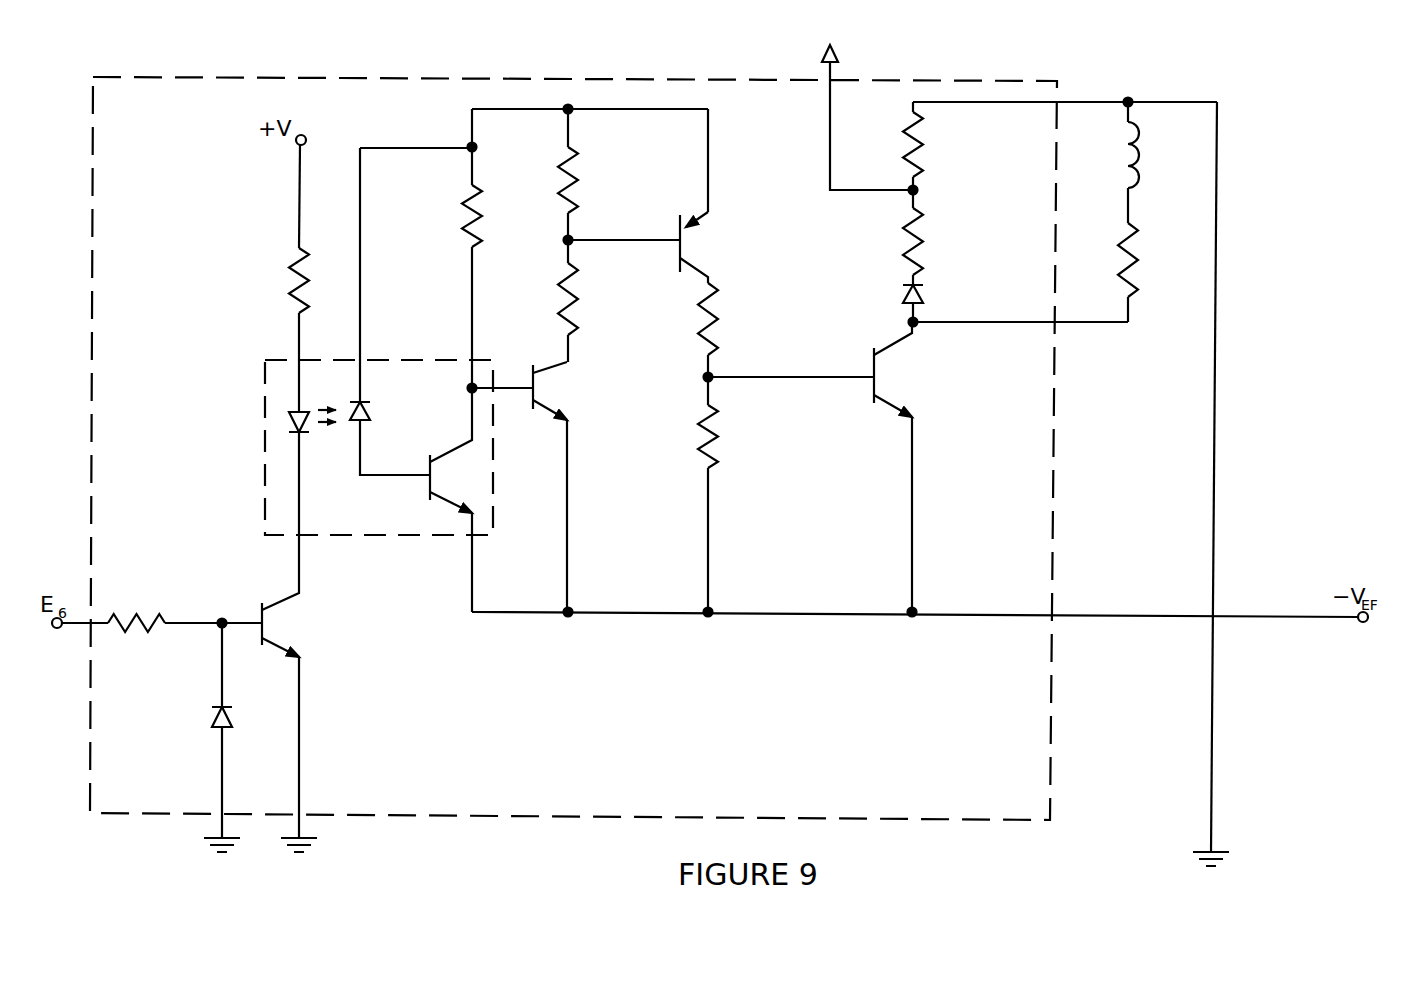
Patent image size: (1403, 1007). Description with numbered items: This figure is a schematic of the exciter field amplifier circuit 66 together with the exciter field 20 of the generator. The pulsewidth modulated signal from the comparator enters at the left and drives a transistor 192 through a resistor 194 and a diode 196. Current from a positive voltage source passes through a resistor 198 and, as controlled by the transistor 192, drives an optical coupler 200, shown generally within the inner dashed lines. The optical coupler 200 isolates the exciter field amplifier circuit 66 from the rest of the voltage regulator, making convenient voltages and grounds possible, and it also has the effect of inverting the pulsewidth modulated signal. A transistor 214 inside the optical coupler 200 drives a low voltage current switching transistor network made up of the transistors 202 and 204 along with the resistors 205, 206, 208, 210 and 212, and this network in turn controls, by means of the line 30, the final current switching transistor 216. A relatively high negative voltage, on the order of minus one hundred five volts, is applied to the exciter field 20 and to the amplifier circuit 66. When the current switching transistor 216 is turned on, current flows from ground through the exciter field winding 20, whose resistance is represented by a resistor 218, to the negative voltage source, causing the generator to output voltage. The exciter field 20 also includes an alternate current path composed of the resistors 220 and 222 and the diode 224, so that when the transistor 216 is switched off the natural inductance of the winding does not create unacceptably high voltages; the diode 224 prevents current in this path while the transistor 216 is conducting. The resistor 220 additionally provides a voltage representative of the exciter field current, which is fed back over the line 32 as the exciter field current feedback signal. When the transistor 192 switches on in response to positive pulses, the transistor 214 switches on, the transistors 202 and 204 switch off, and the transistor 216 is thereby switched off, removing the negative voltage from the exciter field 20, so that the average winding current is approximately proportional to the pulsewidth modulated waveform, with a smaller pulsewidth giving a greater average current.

The exciter field 20 is at (1139, 160).
The line 30 is at (841, 377).
The line 32 is at (833, 72).
The exciter field amplifier circuit 66 is at (582, 79).
The transistor 192 is at (267, 623).
The resistor 194 is at (148, 616).
The diode 196 is at (213, 716).
The resistor 198 is at (291, 262).
The optical coupler 200 is at (263, 412).
The transistor 202 is at (538, 390).
The transistor 204 is at (685, 241).
The resistor 205 is at (466, 188).
The resistor 206 is at (561, 168).
The resistor 208 is at (560, 292).
The resistor 210 is at (706, 303).
The resistor 212 is at (700, 445).
The transistor 214 is at (436, 472).
The current switching transistor 216 is at (878, 374).
The resistor 218 is at (1140, 262).
The resistor 220 is at (916, 138).
The resistor 222 is at (919, 241).
The diode 224 is at (921, 289).